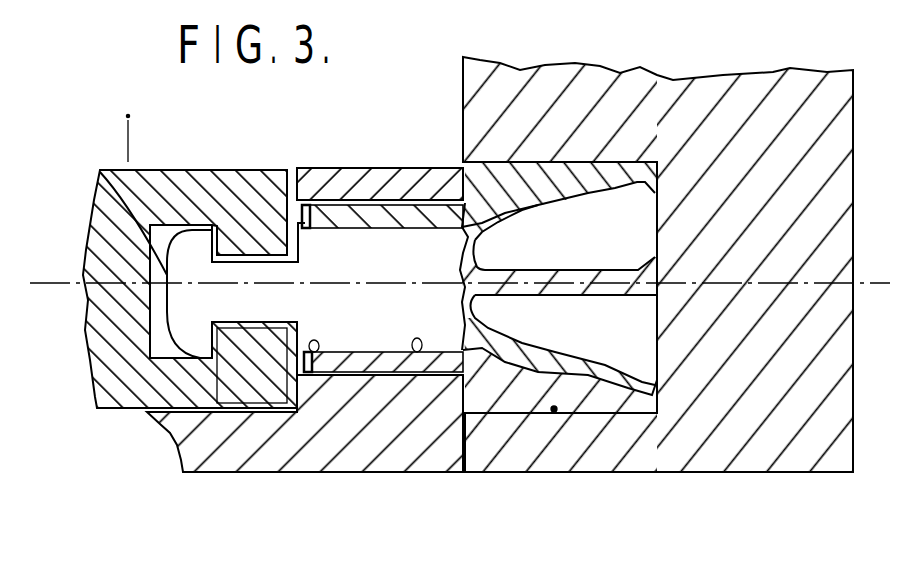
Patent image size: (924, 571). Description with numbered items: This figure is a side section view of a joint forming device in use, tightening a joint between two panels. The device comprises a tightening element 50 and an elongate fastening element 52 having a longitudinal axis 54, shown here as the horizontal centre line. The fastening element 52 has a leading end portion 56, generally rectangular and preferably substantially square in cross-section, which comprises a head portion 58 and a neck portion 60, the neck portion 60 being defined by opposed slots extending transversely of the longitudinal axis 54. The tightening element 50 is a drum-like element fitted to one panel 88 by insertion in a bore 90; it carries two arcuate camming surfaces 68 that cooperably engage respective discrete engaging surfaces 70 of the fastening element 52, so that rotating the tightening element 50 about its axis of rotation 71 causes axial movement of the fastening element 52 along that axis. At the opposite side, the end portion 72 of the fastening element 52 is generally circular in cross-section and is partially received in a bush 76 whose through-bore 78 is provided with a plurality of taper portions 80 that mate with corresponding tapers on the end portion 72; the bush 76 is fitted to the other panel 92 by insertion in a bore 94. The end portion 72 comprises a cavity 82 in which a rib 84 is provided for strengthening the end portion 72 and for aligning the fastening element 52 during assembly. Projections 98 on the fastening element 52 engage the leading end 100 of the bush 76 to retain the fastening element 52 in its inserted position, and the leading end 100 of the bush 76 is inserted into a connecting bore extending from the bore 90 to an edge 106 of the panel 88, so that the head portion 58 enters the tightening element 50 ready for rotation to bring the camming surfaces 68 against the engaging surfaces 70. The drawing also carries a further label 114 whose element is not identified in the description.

The tightening element 50 is at (97, 410).
The elongate fastening element 52 is at (401, 265).
The longitudinal axis 54 is at (58, 283).
The leading end portion 56 is at (340, 285).
The head portion 58 is at (185, 332).
The neck portion 60 is at (240, 282).
The arcuate camming surfaces 68 is at (237, 353).
The engaging surfaces 70 is at (193, 334).
The axis of rotation 71 is at (128, 138).
The end portion 72 is at (580, 360).
The bush 76 is at (485, 185).
The through-bore 78 is at (426, 347).
The taper portions 80 is at (517, 207).
The cavity 82 is at (618, 333).
The rib 84 is at (637, 262).
The panel 88 is at (333, 445).
The bore 90 is at (205, 412).
The other panel 92 is at (800, 447).
The bore 94 is at (553, 412).
The projections 98 is at (295, 220).
The leading end 100 is at (300, 200).
The edge 106 is at (473, 443).
The chamfer surface 114 is at (100, 185).